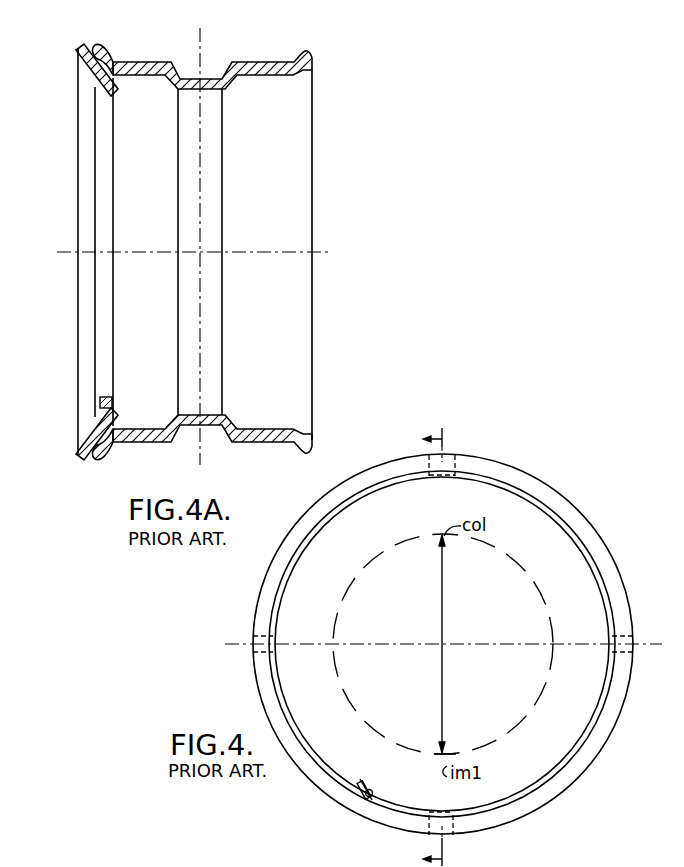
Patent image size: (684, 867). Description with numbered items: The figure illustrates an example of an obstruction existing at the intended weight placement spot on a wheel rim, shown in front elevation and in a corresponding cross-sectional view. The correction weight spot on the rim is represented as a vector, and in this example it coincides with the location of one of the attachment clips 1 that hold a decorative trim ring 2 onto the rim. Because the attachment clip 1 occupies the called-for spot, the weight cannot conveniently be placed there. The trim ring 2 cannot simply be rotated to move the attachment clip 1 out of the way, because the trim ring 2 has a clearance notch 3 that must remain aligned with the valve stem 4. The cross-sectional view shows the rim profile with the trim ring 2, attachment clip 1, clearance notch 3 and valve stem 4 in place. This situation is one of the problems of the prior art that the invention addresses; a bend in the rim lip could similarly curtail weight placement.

In FIG. 4A, the attachment clip 1 is at (100, 43).
In FIG. 4, the attachment clip 1 is at (600, 655).
In FIG. 4A, the decorative trim ring 2 is at (76, 177).
In FIG. 4, the decorative trim ring 2 is at (625, 567).
In FIG. 4A, the clearance notch 3 is at (90, 405).
In FIG. 4, the clearance notch 3 is at (352, 806).
In FIG. 4A, the valve stem 4 is at (110, 402).
In FIG. 4, the valve stem 4 is at (351, 780).